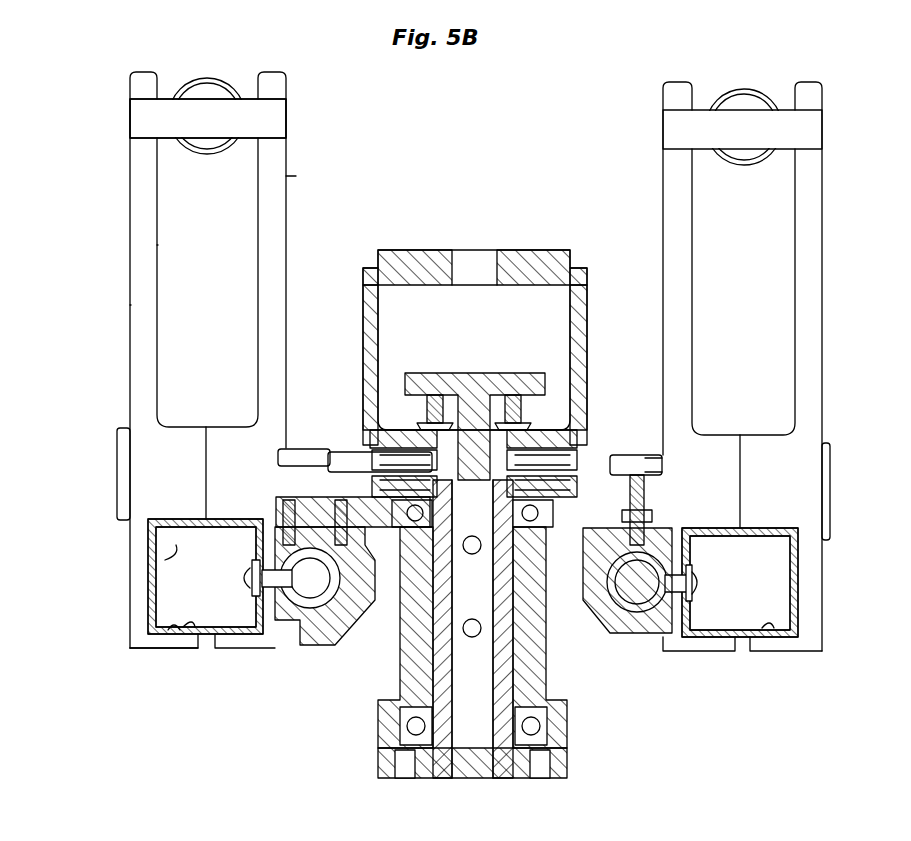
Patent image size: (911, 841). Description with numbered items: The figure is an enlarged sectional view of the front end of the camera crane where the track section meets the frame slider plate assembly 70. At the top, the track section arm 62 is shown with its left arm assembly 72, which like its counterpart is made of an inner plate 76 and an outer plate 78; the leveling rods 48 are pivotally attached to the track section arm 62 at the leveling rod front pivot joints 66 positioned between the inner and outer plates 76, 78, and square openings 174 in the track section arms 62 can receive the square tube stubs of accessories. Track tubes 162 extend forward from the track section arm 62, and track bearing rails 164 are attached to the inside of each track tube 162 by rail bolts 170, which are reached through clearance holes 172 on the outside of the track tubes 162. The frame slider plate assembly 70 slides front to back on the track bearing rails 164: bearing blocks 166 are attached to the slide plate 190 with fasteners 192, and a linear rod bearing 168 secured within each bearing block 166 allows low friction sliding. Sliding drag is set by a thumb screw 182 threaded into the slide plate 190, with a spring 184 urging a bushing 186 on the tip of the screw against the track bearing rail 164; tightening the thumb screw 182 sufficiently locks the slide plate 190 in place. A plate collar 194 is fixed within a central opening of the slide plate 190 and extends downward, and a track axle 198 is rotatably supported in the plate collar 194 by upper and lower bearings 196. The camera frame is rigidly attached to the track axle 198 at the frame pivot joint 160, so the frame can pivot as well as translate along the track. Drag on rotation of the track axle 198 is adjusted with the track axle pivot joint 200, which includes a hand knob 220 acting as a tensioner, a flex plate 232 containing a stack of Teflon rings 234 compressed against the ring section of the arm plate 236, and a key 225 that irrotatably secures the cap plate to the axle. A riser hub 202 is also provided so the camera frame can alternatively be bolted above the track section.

The leveling rod 48 is at (205, 88).
The leveling rod front pivot joint 66 is at (245, 110).
The track section arm 62 is at (135, 185).
The frame slider plate assembly 70 is at (612, 658).
The left arm assembly 72 is at (128, 303).
The inner plate 76 is at (287, 178).
The outer plate 78 is at (148, 243).
The frame pivot joint 160 is at (222, 662).
The track tube 162 is at (165, 645).
The track bearing rail 164 is at (282, 640).
The bearing block 166 is at (345, 625).
The linear rod bearing 168 is at (310, 598).
The rail bolt 170 is at (248, 568).
The clearance hole 172 is at (150, 590).
The square opening 174 is at (165, 560).
The thumb screw 182 is at (305, 450).
The spring 184 is at (642, 500).
The bushing 186 is at (662, 578).
The slide plate 190 is at (282, 510).
The fastener 192 is at (284, 495).
The plate collar 194 is at (392, 715).
The upper and lower bearings 196 is at (415, 560).
The track axle 198 is at (420, 778).
The track axle pivot joint 200 is at (580, 335).
The riser hub 202 is at (403, 265).
The hand knob 220 is at (448, 383).
The key 225 is at (500, 430).
The flex plate 232 is at (560, 440).
The Teflon rings 234 is at (393, 430).
The arm plate 236 is at (338, 452).